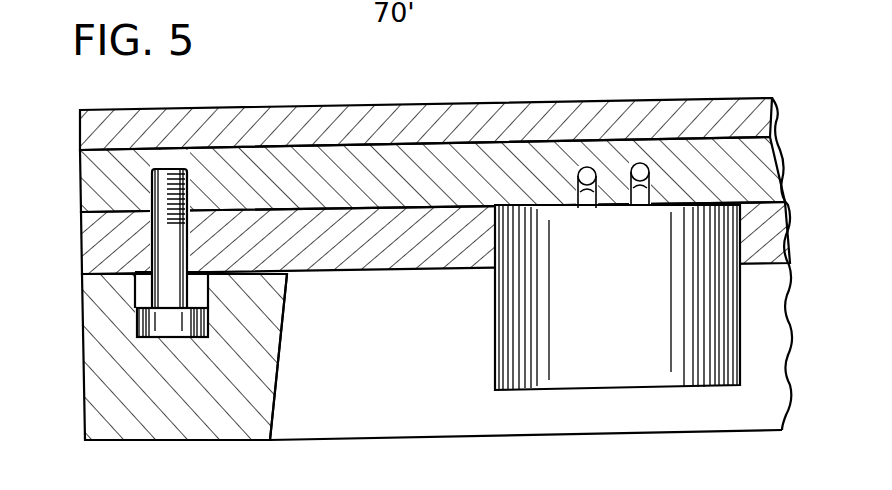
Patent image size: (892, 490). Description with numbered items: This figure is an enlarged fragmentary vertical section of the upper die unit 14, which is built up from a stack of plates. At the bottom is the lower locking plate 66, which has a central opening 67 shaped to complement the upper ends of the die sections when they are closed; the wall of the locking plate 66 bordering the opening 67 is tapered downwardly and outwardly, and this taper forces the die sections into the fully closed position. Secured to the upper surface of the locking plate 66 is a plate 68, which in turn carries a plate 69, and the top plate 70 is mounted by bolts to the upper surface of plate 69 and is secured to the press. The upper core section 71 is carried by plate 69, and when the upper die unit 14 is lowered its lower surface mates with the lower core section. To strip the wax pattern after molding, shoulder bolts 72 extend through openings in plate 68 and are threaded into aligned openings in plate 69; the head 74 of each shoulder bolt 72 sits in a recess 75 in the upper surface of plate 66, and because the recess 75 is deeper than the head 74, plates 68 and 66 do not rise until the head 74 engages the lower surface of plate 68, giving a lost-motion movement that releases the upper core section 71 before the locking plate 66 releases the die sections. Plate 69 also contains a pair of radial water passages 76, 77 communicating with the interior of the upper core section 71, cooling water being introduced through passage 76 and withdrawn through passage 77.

The upper die unit 14 is at (682, 90).
The lower locking plate 66 is at (112, 350).
The central opening 67 is at (273, 410).
The plate 68 is at (100, 234).
The plate 69 is at (95, 161).
The top plate 70 is at (144, 118).
The upper core section 71 is at (506, 305).
The shoulder bolt 72 is at (186, 186).
The head 74 is at (208, 318).
The recess 75 is at (138, 290).
The water passage 76 is at (590, 210).
The water passage 77 is at (636, 206).